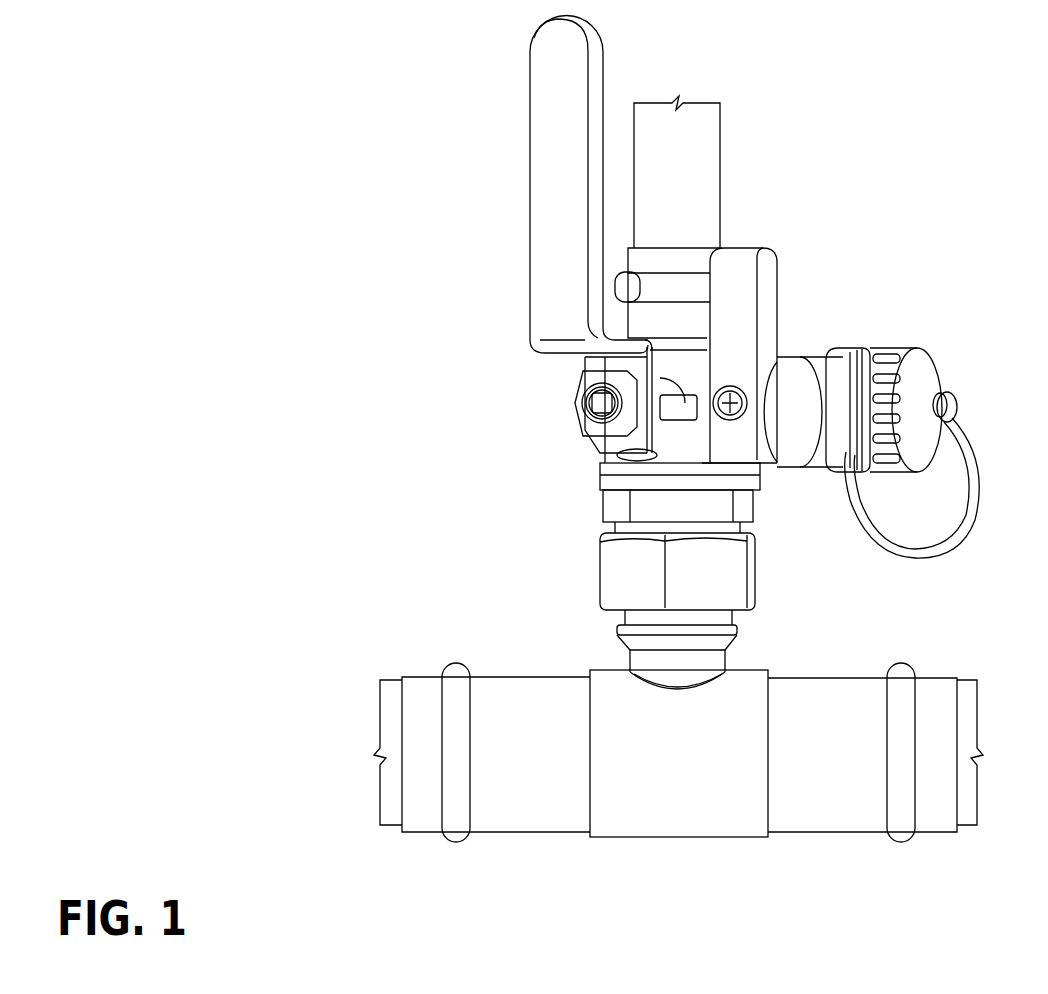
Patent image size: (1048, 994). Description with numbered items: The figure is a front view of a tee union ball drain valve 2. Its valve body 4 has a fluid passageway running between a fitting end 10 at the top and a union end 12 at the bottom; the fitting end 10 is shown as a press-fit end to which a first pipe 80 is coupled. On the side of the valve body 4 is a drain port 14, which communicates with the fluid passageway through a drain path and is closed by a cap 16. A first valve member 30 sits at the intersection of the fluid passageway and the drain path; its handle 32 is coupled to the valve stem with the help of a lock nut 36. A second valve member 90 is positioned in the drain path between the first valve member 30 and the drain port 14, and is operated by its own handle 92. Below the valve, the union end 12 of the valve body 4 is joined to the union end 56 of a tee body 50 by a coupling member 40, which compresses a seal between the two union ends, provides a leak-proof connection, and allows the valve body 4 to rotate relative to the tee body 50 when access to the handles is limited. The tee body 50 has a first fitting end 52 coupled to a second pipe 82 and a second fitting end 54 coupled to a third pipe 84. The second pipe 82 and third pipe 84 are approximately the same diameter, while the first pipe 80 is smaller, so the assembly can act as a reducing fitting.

The tee union ball drain valve 2 is at (800, 200).
The valve body 4 is at (637, 472).
The fitting end 10 is at (640, 285).
The union end 12 is at (617, 505).
The drain port 14 is at (870, 357).
The cap 16 is at (927, 378).
The first valve member 30 is at (660, 387).
The handle 32 is at (543, 288).
The lock nut 36 is at (580, 412).
The coupling member 40 is at (618, 578).
The tee body 50 is at (665, 805).
The first fitting end 52 is at (850, 805).
The second fitting end 54 is at (527, 808).
The union end 56 is at (740, 646).
The first pipe 80 is at (695, 196).
The second pipe 82 is at (965, 710).
The third pipe 84 is at (388, 810).
The second valve member 90 is at (730, 420).
The handle 92 is at (742, 347).